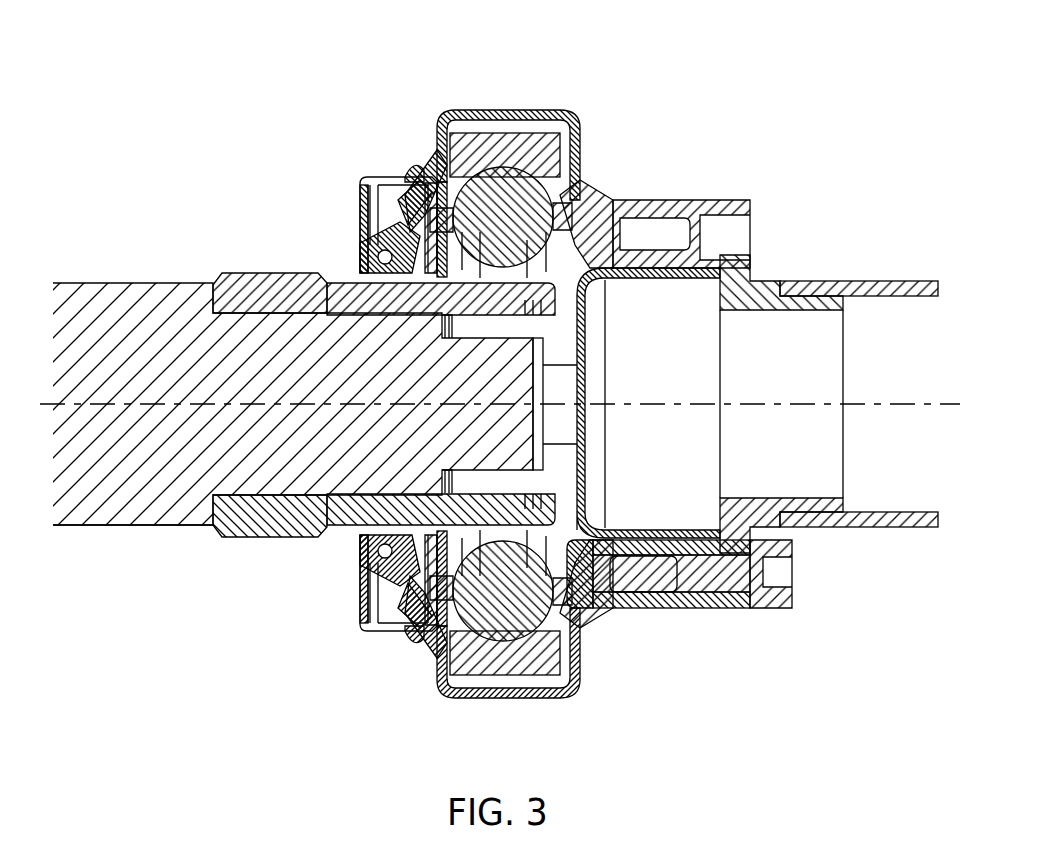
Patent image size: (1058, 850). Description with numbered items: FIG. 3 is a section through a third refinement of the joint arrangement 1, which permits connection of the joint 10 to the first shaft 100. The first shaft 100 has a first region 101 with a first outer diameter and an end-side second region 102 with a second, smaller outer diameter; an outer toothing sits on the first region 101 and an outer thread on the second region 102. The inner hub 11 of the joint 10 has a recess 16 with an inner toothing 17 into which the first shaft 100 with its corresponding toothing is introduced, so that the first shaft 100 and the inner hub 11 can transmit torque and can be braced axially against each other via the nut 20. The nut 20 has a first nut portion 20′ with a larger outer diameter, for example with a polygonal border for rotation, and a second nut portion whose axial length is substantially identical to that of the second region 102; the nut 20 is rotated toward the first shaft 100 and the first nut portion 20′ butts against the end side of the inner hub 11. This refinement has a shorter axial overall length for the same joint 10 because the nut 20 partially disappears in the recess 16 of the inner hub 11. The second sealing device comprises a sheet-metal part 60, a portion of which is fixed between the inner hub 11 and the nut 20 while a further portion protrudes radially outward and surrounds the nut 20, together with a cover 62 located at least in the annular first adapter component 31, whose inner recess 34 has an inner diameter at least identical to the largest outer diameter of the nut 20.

The joint arrangement 1 is at (445, 76).
The joint 10 is at (540, 92).
The inner hub 11 is at (350, 527).
The recess 16 is at (214, 484).
The inner toothing 17 is at (330, 281).
The nut 20 is at (600, 617).
The first nut portion 20′ is at (591, 180).
The first adapter component 31 is at (678, 606).
The inner recess 34 is at (690, 253).
The sheet-metal part 60 is at (681, 194).
The cover 62 is at (633, 262).
The first shaft 100 is at (150, 360).
The first region 101 is at (307, 487).
The second region 102 is at (362, 612).